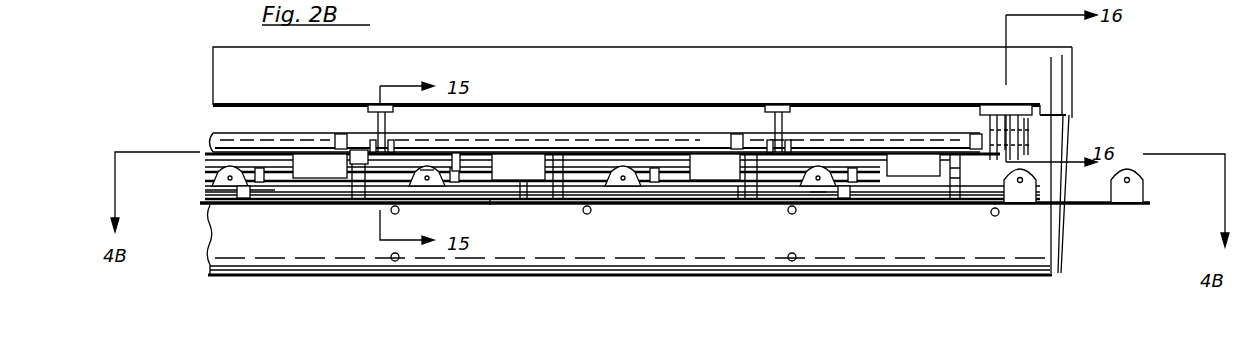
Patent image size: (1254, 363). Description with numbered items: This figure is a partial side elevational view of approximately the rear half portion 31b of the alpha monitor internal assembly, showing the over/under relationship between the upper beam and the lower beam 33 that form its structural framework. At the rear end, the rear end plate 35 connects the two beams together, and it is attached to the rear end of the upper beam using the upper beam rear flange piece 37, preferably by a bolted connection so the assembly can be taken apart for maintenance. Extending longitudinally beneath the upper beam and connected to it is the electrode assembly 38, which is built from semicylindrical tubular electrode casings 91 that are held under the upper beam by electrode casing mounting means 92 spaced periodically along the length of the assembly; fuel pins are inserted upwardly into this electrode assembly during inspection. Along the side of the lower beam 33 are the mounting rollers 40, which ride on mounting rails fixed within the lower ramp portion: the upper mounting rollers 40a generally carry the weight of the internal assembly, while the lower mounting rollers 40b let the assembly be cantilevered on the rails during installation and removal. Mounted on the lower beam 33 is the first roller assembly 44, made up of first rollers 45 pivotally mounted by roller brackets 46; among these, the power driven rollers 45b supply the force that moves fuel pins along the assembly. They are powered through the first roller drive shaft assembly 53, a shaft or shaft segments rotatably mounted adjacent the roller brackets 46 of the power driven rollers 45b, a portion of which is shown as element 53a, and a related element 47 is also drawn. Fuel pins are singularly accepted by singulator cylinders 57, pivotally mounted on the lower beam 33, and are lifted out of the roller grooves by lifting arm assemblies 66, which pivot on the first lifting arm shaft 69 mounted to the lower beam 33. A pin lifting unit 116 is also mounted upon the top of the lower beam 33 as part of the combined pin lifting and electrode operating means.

The rear half portion 31b is at (778, 47).
The upper beam rear flange piece 37 is at (1072, 97).
The rear end plate 35 is at (1069, 128).
The electrode casing 91 is at (220, 138).
The electrode assembly 38 is at (578, 130).
The first roller assembly 44 is at (882, 205).
The lower beam 33 is at (690, 243).
The mounting rollers 40 is at (796, 257).
The upper mounting rollers 40a is at (400, 212).
The lower mounting rollers 40b is at (395, 261).
The block 53a is at (290, 201).
The first roller drive shaft assembly 53 is at (738, 201).
The singulator cylinders 57 is at (524, 175).
The pin lifting unit 116 is at (355, 152).
The lifting arm assemblies 66 is at (458, 168).
The first lifting arm shaft 69 is at (488, 203).
The first rollers 45 is at (210, 172).
The power driven rollers 45b is at (426, 170).
The roller brackets 46 is at (233, 198).
The pin 47 is at (820, 178).
The electrode casing mounting means 92 is at (376, 104).